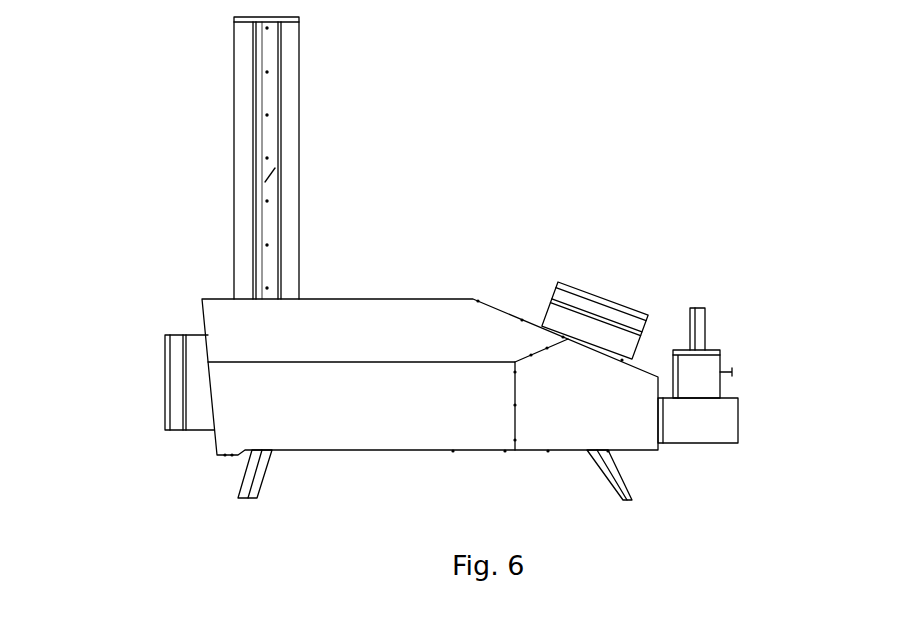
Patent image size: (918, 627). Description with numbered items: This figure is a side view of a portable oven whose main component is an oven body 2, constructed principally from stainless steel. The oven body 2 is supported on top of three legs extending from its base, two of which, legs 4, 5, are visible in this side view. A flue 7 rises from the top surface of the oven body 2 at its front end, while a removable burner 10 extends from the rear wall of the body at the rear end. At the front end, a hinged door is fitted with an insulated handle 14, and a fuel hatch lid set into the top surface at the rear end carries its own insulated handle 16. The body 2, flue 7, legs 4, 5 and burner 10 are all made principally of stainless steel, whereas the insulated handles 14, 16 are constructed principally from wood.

The oven body 2 is at (380, 299).
The flue 7 is at (300, 90).
The insulated handle 16 is at (597, 296).
The insulated handle 14 is at (163, 380).
The leg 4 is at (238, 498).
The leg 5 is at (632, 500).
The removable burner 10 is at (740, 410).